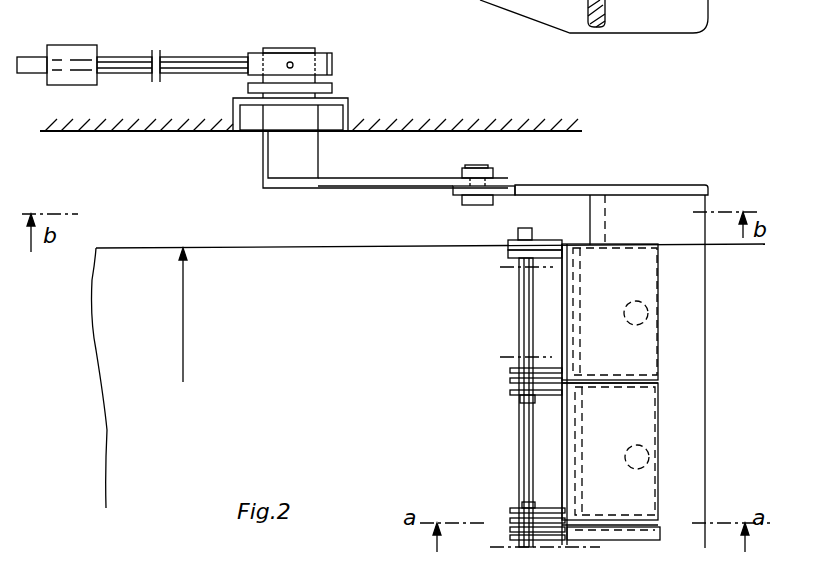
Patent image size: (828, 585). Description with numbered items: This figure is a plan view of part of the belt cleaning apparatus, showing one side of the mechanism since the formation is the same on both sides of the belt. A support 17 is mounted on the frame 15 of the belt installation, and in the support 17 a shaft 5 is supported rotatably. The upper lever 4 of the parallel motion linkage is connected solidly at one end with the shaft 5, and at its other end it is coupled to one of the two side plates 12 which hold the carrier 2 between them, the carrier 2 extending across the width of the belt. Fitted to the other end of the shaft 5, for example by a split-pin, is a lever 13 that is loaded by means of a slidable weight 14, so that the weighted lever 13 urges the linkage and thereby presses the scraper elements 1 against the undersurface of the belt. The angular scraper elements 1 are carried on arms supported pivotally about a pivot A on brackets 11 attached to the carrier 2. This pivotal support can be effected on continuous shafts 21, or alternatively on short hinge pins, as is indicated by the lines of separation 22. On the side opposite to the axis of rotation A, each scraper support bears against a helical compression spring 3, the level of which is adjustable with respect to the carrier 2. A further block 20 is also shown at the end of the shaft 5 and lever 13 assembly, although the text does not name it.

The scraper element 1 is at (562, 526).
The carrier 2 is at (645, 205).
The helical compression spring 3 is at (644, 317).
The lever 4 is at (370, 186).
The shaft 5 is at (300, 112).
The bracket 11 is at (548, 240).
The side plate 12 is at (547, 187).
The lever 13 is at (188, 60).
The slidable weight 14 is at (73, 53).
The frame 15 is at (478, 131).
The support 17 is at (237, 118).
The block 20 is at (312, 80).
The continuous shaft 21 is at (523, 305).
The line of separation 22 is at (508, 268).
The pivot A is at (508, 257).